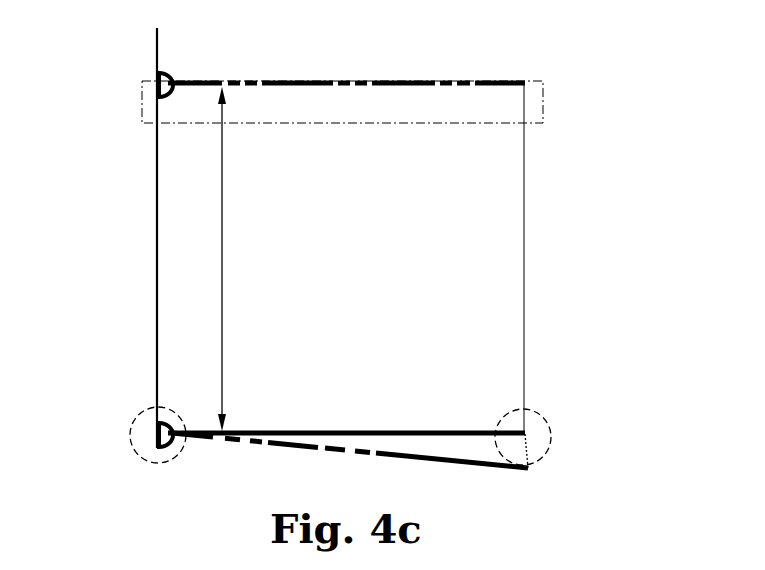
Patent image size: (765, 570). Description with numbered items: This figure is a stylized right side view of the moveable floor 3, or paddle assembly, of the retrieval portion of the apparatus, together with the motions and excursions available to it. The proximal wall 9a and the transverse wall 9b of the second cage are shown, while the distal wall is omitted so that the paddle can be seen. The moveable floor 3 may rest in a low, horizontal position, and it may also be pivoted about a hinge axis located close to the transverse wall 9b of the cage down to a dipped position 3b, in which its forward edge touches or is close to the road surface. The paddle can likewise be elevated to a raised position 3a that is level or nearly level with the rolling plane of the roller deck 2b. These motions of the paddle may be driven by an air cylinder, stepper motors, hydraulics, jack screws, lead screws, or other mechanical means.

The roller deck 2b is at (142, 82).
The raised position 3a is at (407, 81).
The moveable floor 3 is at (385, 432).
The dipped position 3b is at (300, 448).
The proximal wall 9a is at (515, 190).
The transverse wall 9b is at (157, 382).